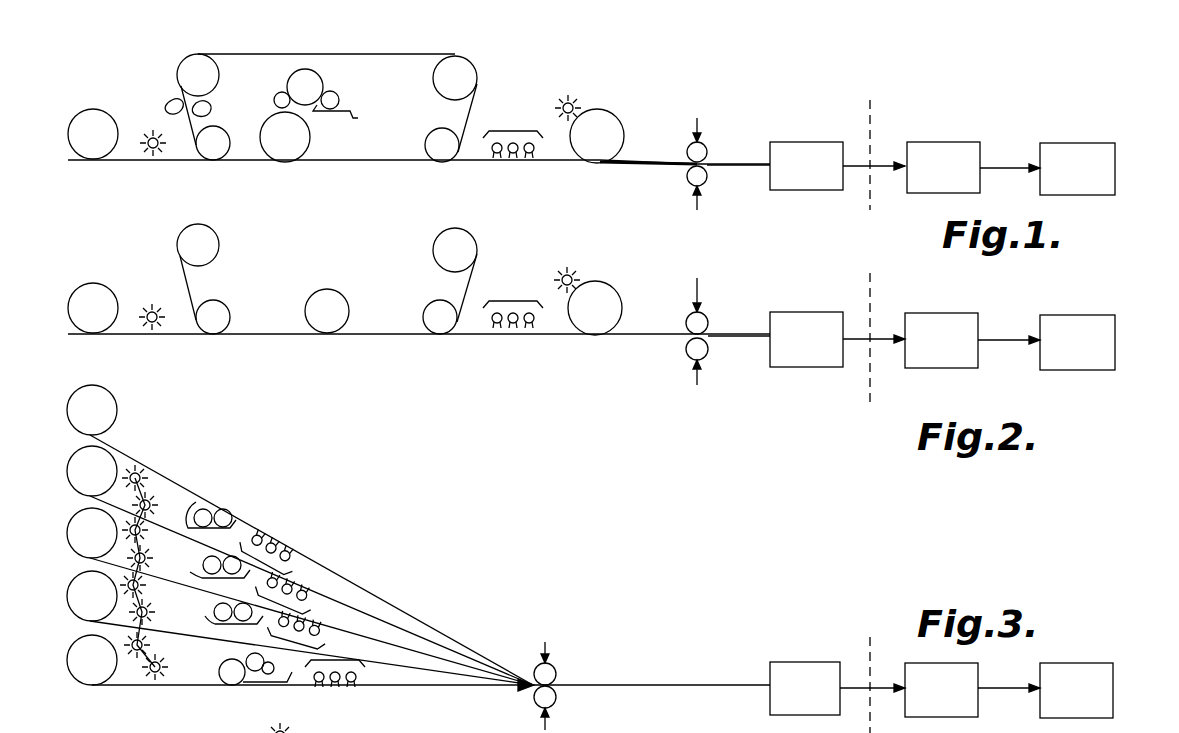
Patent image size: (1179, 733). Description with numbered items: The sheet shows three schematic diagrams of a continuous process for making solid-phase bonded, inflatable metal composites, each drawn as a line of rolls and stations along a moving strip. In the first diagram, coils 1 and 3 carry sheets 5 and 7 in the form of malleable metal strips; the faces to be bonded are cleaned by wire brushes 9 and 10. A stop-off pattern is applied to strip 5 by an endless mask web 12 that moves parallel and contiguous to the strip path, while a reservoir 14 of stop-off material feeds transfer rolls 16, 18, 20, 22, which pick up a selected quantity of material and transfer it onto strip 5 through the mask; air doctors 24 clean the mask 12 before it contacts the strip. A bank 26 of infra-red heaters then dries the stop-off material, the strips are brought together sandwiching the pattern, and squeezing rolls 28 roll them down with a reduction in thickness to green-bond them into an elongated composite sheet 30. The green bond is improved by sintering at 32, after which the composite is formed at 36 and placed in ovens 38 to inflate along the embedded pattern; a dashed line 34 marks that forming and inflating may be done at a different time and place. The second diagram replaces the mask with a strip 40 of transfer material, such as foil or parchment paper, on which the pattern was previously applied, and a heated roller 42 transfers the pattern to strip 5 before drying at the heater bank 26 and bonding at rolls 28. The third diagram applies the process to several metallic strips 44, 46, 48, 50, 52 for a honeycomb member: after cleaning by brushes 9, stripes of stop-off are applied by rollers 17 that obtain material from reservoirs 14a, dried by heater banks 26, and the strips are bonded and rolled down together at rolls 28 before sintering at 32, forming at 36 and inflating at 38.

In FIG. 1, the coil 1 is at (89, 115).
In FIG. 2, the coil 1 is at (110, 292).
In FIG. 3, the coil 1 is at (92, 535).
In FIG. 1, the coil 3 is at (623, 134).
In FIG. 2, the coil 3 is at (620, 302).
In FIG. 1, the sheet 5 is at (148, 160).
In FIG. 2, the sheet 5 is at (180, 334).
In FIG. 1, the sheet 7 is at (646, 163).
In FIG. 1, the wire brush 9 is at (149, 136).
In FIG. 2, the wire brush 9 is at (161, 305).
In FIG. 3, the wire brush 9 is at (144, 480).
In FIG. 1, the wire brush 10 is at (577, 107).
In FIG. 2, the wire brush 10 is at (576, 274).
In FIG. 1, the endless mask web 12 is at (393, 36).
In FIG. 1, the reservoir 14 is at (345, 119).
In FIG. 3, the reservoirs 14a is at (197, 502).
In FIG. 1, the transfer roll 16 is at (336, 100).
In FIG. 3, the rollers 17 is at (248, 496).
In FIG. 1, the transfer roll 18 is at (319, 78).
In FIG. 1, the transfer roll 20 is at (278, 98).
In FIG. 1, the transfer roll 22 is at (298, 142).
In FIG. 1, the air doctors 24 is at (170, 98).
In FIG. 1, the bank of infra-red heaters 26 is at (522, 124).
In FIG. 2, the bank of infra-red heaters 26 is at (517, 300).
In FIG. 3, the bank of infra-red heaters 26 is at (306, 560).
In FIG. 1, the squeezing rolls 28 is at (709, 178).
In FIG. 2, the squeezing rolls 28 is at (684, 352).
In FIG. 3, the squeezing rolls 28 is at (562, 665).
In FIG. 1, the composite sheet 30 is at (756, 146).
In FIG. 2, the composite sheet 30 is at (758, 318).
In FIG. 1, the sintering 32 is at (838, 124).
In FIG. 2, the sintering 32 is at (832, 294).
In FIG. 3, the sintering 32 is at (836, 648).
In FIG. 1, the dashed line 34 is at (870, 132).
In FIG. 2, the dashed line 34 is at (870, 312).
In FIG. 3, the dashed line 34 is at (872, 671).
In FIG. 1, the forming step 36 is at (957, 142).
In FIG. 2, the forming step 36 is at (978, 322).
In FIG. 3, the forming step 36 is at (978, 678).
In FIG. 1, the ovens 38 is at (1048, 143).
In FIG. 2, the ovens 38 is at (1102, 315).
In FIG. 3, the ovens 38 is at (1112, 690).
In FIG. 2, the strip of transfer material 40 is at (194, 288).
In FIG. 2, the heated roller 42 is at (340, 275).
In FIG. 3, the metallic strip 44 is at (398, 572).
In FIG. 3, the metallic strip 46 is at (430, 634).
In FIG. 3, the metallic strip 48 is at (470, 662).
In FIG. 3, the metallic strip 50 is at (452, 676).
In FIG. 3, the metallic strip 52 is at (396, 686).